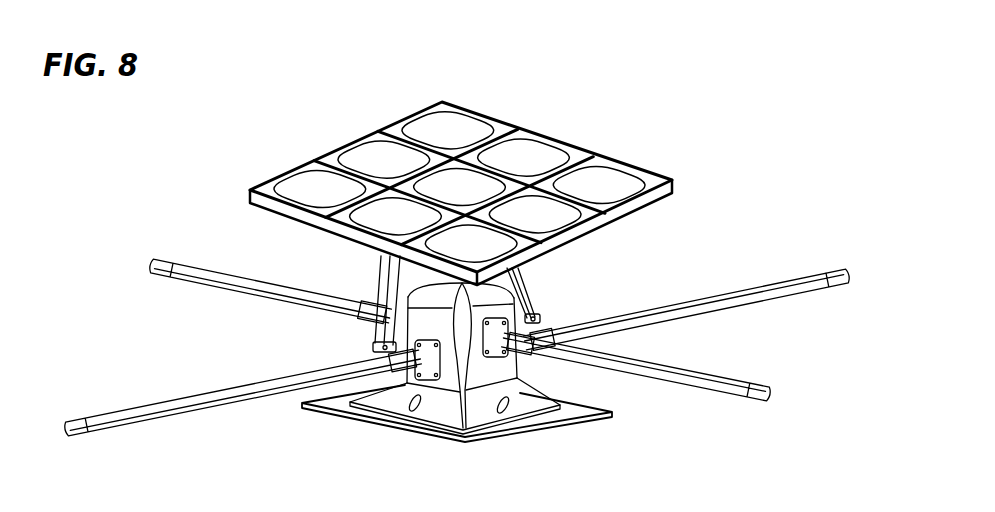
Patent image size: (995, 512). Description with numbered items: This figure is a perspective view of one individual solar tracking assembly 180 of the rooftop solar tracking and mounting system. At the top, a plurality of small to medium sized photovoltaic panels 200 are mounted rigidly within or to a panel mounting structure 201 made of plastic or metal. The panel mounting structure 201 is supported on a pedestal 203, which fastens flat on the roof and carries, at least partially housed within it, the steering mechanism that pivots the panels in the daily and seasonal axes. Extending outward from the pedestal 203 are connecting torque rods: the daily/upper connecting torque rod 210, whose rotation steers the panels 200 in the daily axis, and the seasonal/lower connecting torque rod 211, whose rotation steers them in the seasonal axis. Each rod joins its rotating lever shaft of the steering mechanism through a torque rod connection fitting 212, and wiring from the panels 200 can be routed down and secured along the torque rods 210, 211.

The solar tracking assembly 180 is at (620, 151).
The photovoltaic panel 200 is at (533, 147).
The panel mounting structure 201 is at (658, 193).
The pedestal 203 is at (493, 428).
The daily/upper connecting torque rod 210 is at (253, 290).
The seasonal/lower connecting torque rod 211 is at (687, 307).
The torque rod connection fitting 212 is at (723, 377).